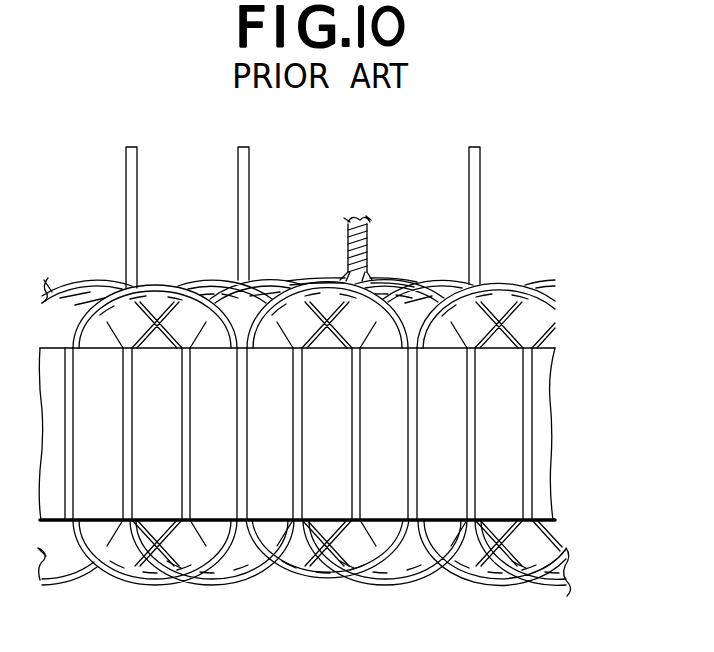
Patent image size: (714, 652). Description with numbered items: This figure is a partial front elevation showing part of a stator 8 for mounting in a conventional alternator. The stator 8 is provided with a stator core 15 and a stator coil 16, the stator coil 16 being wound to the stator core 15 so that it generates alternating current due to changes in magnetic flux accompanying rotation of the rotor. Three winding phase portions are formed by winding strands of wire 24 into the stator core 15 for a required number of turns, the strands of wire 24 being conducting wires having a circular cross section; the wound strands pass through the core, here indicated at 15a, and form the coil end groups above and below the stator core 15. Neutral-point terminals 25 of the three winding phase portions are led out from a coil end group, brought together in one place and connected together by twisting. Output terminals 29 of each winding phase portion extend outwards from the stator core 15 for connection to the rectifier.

The stator 8 is at (47, 181).
The stator core 15 is at (549, 380).
The slot 15a is at (527, 431).
The stator coil 16 is at (552, 316).
The strands of wire 24 is at (523, 278).
The neutral-point terminals 25 is at (370, 221).
The output terminals 29 is at (137, 185).